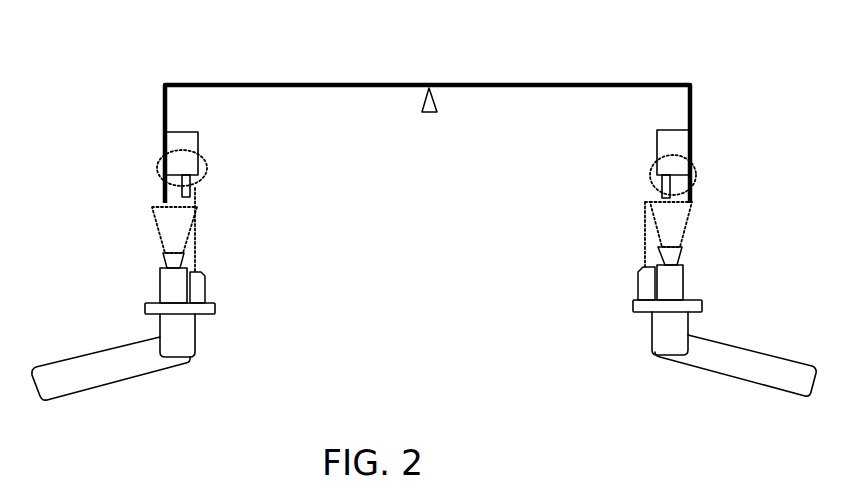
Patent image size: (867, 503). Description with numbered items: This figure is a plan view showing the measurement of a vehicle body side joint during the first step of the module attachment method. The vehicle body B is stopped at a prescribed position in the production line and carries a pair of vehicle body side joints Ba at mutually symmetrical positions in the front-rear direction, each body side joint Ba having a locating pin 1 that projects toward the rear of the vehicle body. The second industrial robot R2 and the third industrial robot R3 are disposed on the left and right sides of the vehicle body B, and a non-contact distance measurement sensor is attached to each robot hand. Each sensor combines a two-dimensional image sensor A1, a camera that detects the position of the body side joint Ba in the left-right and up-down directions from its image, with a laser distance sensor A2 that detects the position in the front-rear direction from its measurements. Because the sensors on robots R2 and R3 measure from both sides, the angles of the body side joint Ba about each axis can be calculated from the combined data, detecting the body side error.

The vehicle body B is at (267, 82).
The vehicle body side joint Ba is at (175, 186).
The locating pin 1 is at (190, 185).
The two-dimensional image sensor A1 is at (170, 277).
The laser distance sensor A2 is at (198, 284).
The second industrial robot R2 is at (51, 362).
The third industrial robot R3 is at (718, 338).